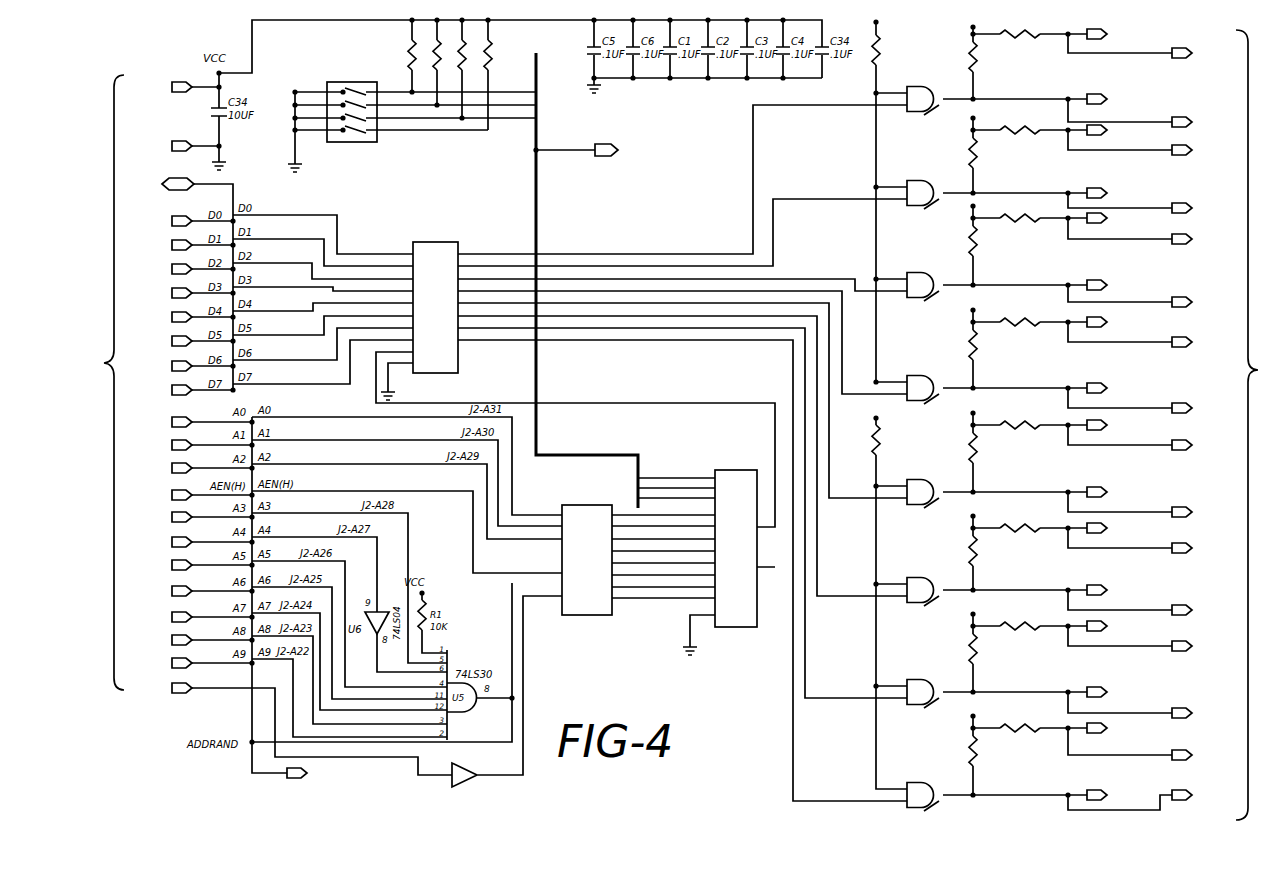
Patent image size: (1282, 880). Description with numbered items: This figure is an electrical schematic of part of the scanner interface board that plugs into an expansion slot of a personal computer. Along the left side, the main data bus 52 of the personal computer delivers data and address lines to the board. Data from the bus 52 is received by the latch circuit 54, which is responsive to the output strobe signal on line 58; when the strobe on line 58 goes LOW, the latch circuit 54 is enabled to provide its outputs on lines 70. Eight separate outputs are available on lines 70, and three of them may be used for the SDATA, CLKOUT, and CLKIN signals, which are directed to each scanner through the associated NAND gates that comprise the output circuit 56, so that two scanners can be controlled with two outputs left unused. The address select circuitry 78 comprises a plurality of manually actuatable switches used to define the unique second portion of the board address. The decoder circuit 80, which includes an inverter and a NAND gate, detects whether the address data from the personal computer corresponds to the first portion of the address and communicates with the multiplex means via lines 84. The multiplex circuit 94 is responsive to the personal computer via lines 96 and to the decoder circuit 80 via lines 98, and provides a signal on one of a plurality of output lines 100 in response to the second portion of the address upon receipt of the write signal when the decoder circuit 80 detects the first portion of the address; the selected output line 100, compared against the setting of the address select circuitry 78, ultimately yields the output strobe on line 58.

The main data bus 52 is at (163, 385).
The latch circuit 54 is at (409, 214).
The output circuit 56 is at (777, 785).
The output strobe signal line 58 is at (694, 402).
The latch output lines 70 is at (623, 241).
The address select circuitry 78 is at (305, 75).
The decoder circuit 80 is at (393, 765).
The lines 84 is at (250, 762).
The multiplex circuit 94 is at (576, 143).
The lines 96 is at (537, 505).
The lines 98 is at (515, 574).
The output lines 100 is at (637, 623).